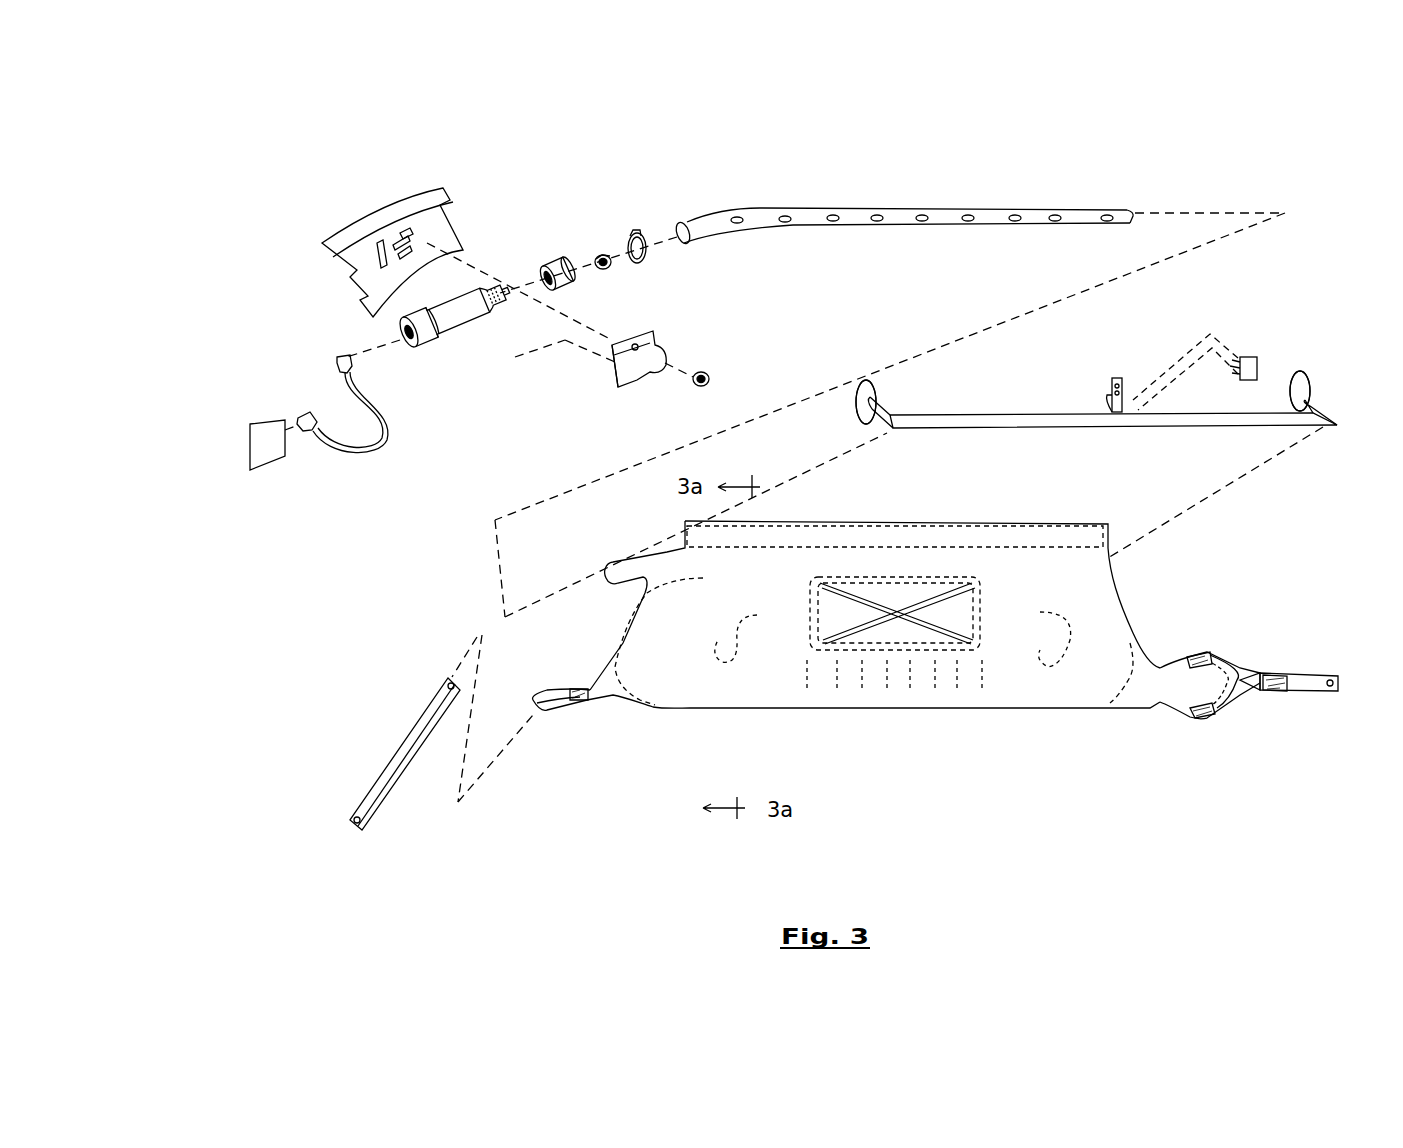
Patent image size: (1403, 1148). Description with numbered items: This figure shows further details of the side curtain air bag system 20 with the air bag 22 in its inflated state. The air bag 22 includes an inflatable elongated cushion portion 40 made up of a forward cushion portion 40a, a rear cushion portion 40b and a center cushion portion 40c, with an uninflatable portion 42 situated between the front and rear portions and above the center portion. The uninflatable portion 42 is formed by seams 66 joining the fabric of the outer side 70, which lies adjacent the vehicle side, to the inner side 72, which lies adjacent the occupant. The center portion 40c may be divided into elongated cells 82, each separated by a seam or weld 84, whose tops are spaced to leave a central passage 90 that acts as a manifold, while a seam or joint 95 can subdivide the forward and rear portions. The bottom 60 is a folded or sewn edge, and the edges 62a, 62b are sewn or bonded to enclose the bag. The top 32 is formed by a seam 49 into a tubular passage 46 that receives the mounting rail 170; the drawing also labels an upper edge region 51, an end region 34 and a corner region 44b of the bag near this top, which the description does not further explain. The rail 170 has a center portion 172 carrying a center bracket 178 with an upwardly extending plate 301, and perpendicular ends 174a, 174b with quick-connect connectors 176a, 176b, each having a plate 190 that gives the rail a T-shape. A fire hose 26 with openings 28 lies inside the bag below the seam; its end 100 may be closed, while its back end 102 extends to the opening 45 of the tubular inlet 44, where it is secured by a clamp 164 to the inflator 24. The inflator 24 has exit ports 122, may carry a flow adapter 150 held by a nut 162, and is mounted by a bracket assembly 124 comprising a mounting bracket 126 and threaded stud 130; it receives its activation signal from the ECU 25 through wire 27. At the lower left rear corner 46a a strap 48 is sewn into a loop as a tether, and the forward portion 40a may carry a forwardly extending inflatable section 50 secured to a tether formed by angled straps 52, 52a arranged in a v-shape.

The side curtain air bag system 20 is at (606, 141).
The air bag 22 is at (755, 720).
The inflator 24 is at (470, 315).
The ECU 25 is at (268, 452).
The fire hose 26 is at (904, 207).
The wire 27 is at (383, 435).
The openings 28 is at (877, 228).
The top of the air bag 32 is at (940, 543).
The end 34 is at (1105, 540).
The inflatable cushion portion 40 is at (788, 700).
The forward cushion portion 40a is at (1072, 670).
The rear cushion portion 40b is at (713, 702).
The center cushion portion 40c is at (875, 688).
The uninflatable portion 42 is at (950, 640).
The tubular portion or inlet 44 is at (643, 565).
The corner 44b is at (1110, 565).
The opening 45 is at (605, 570).
The tubular passage 46 is at (972, 540).
The lower left rear corner 46a is at (610, 690).
The strap 48 is at (1045, 520).
The seam 49 is at (955, 520).
The forwardly extending inflatable section 50 is at (1231, 681).
The top edge 51 is at (855, 520).
The angled strap 52 is at (1242, 700).
The angled strap 52a is at (1240, 668).
The bottom of the air bag 60 is at (660, 700).
The edge 62a is at (630, 628).
The edge 62b is at (1120, 628).
The bonds or seams 66 is at (894, 613).
The outer side 70 is at (1010, 695).
The inner side 72 is at (1045, 695).
The elongated cells 82 is at (847, 693).
The seam or weld 84 is at (910, 683).
The central passage 90 is at (810, 660).
The seam or joint 95 is at (740, 645).
The end of the hose 100 is at (1133, 210).
The back end of the tube 102 is at (700, 232).
The exit ports 122 is at (473, 297).
The bracket assembly 124 is at (618, 345).
The mounting bracket 126 is at (370, 222).
The threaded stud 130 is at (510, 305).
The adapter 150 is at (555, 255).
The nut 162 is at (600, 252).
The clamp 164 is at (645, 235).
The mounting rail 170 is at (1077, 395).
The center portion 172 is at (1040, 415).
The extending end 174a is at (880, 420).
The extending end 174b is at (1320, 415).
The quick-connect connector 176a is at (880, 398).
The quick-connect connector 176b is at (1283, 398).
The center bracket 178 is at (1112, 380).
The plate 190 is at (855, 395).
The plate 301 is at (1250, 357).